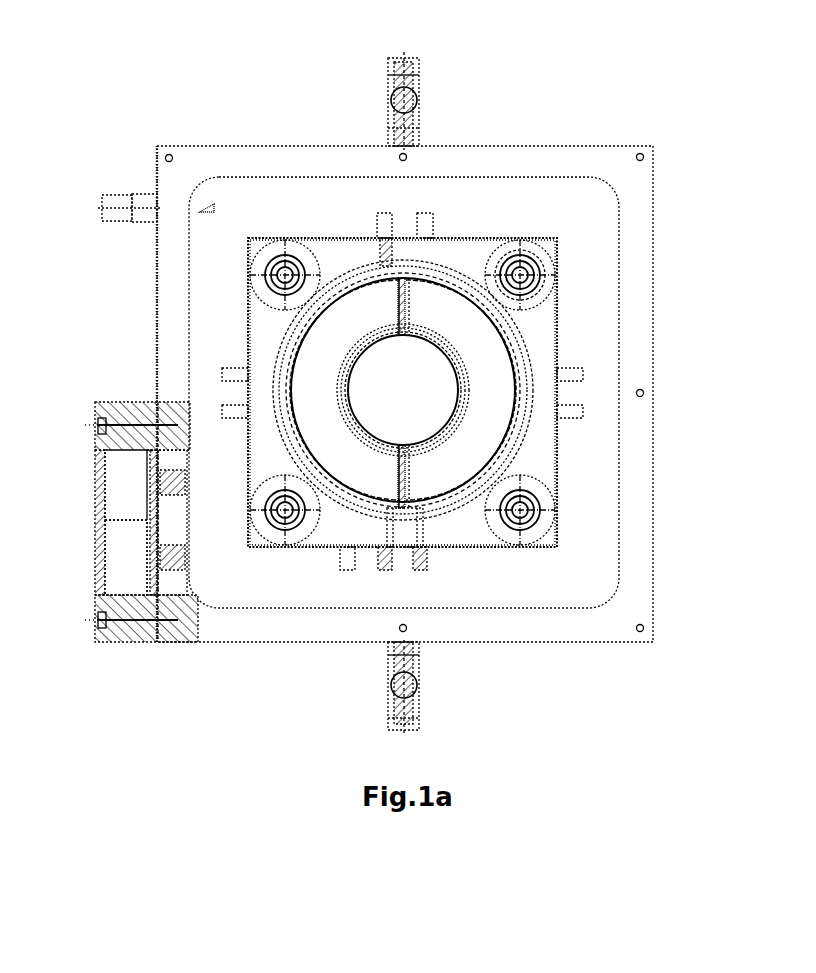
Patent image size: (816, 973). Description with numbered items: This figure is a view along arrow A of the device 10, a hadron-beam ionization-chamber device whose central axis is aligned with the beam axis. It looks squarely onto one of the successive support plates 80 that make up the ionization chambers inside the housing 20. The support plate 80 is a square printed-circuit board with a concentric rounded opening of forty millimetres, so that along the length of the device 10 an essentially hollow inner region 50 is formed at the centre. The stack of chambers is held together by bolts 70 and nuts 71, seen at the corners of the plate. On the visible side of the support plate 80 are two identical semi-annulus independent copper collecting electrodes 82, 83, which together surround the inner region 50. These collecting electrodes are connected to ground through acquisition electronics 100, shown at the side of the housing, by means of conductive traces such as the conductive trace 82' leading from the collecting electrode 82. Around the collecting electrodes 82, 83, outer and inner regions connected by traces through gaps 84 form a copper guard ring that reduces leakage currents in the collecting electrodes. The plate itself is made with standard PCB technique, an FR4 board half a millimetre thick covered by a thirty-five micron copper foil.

The device 10 is at (170, 121).
The housing 20 is at (440, 157).
The inner region 50 is at (353, 400).
The bolts 70 is at (528, 264).
The nuts 71 is at (540, 292).
The support plate 80 is at (353, 238).
The collecting electrode 82 is at (499, 390).
The conductive trace 82' is at (435, 545).
The collecting electrode 83 is at (310, 393).
The gaps 84 is at (403, 473).
The acquisition electronics 100 is at (100, 402).